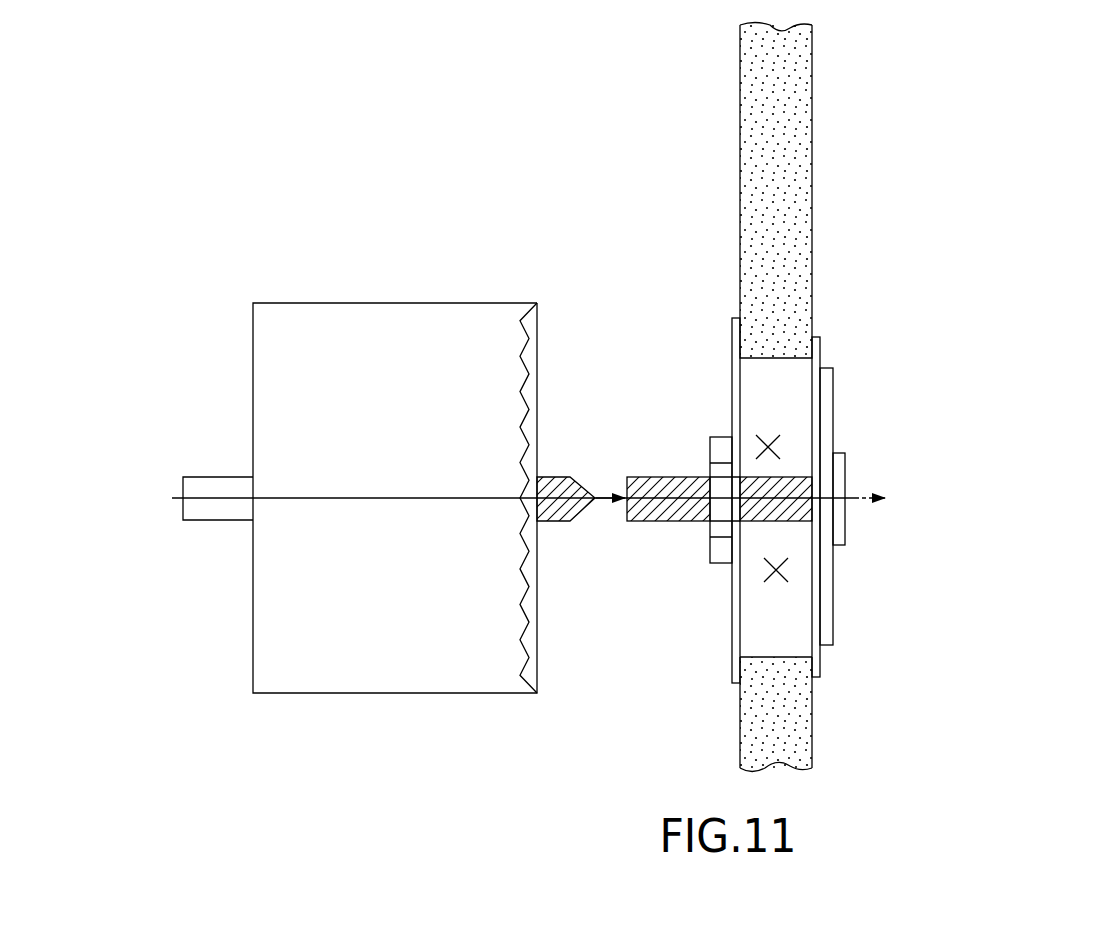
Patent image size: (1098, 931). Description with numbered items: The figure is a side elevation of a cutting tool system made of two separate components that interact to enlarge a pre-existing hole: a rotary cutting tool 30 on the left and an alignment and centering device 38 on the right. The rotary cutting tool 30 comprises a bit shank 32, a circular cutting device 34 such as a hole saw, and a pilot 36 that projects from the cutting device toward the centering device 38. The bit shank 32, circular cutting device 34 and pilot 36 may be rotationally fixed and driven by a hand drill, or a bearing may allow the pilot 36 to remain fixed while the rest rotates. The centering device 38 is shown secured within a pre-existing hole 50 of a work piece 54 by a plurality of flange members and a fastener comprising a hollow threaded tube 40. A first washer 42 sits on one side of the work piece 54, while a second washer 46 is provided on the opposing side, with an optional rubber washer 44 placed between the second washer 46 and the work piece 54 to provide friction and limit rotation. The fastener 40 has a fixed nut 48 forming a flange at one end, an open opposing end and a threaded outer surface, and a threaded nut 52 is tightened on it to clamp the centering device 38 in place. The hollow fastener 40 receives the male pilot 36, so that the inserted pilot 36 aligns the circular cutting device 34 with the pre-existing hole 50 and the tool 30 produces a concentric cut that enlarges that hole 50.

The rotary cutting tool 30 is at (285, 278).
The bit shank 32 is at (218, 523).
The circular cutting device 34 is at (387, 637).
The pilot 36 is at (562, 523).
The centering device 38 is at (863, 575).
The hollow threaded tube 40 is at (647, 460).
The first washer 42 is at (722, 340).
The rubber washer 44 is at (817, 327).
The second washer 46 is at (840, 350).
The fixed nut 48 is at (848, 473).
The pre-existing hole 50 is at (753, 518).
The threaded nut 52 is at (712, 563).
The work piece 54 is at (813, 85).